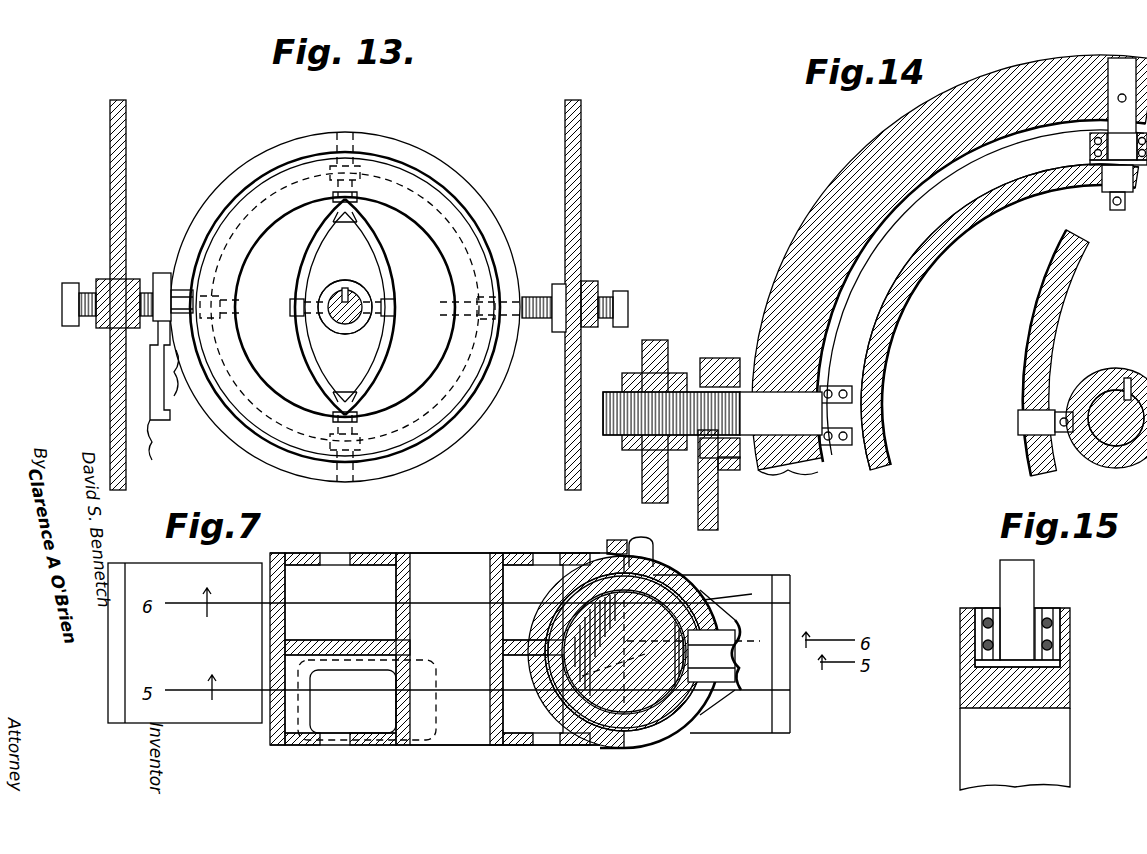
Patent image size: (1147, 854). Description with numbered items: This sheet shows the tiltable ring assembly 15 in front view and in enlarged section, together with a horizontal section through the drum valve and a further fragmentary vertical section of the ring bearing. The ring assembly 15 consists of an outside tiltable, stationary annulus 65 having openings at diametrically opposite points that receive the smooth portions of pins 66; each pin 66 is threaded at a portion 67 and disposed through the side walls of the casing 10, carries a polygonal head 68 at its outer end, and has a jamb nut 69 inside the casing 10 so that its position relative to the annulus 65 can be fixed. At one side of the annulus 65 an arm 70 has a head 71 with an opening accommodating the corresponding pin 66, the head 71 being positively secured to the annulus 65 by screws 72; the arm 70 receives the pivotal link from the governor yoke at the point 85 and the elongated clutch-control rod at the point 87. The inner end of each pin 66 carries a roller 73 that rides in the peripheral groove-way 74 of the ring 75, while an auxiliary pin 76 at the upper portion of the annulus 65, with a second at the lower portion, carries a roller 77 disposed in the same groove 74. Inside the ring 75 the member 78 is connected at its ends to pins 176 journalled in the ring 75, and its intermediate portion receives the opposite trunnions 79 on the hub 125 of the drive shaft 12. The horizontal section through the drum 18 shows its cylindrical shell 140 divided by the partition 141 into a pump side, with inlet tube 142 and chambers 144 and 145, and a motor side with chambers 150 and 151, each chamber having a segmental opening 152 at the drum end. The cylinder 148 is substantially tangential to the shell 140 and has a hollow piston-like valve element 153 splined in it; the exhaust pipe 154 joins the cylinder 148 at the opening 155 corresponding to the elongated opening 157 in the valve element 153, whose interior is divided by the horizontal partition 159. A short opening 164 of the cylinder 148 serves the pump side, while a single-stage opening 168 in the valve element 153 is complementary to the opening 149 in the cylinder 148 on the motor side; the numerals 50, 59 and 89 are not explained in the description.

In FIG. 13, the casing 10 is at (110, 236).
In FIG. 13, the drive shaft 12 is at (349, 287).
In FIG. 13, the ring assembly 15 is at (409, 129).
In FIG. 7, the drum 18 is at (410, 551).
In FIG. 7, the valve body wall 50 is at (492, 565).
In FIG. 7, the coupling block 59 is at (232, 574).
In FIG. 13, the annulus 65 is at (421, 165).
In FIG. 14, the annulus 65 is at (806, 228).
In FIG. 14, the pins 66 is at (762, 342).
In FIG. 13, the threaded portion 67 is at (548, 283).
In FIG. 14, the threaded portion 67 is at (692, 456).
In FIG. 13, the polygonal shaped head 68 is at (628, 292).
In FIG. 13, the jamb nut 69 is at (558, 333).
In FIG. 14, the arm 70 is at (720, 505).
In FIG. 14, the head 71 is at (706, 358).
In FIG. 14, the screws 72 is at (700, 372).
In FIG. 14, the roller 73 is at (878, 366).
In FIG. 14, the peripheral groove-way 74 is at (892, 304).
In FIG. 13, the ring 75 is at (439, 382).
In FIG. 14, the ring 75 is at (951, 264).
In FIG. 15, the ring 75 is at (1056, 702).
In FIG. 13, the auxiliary pin 76 is at (350, 482).
In FIG. 14, the auxiliary pin 76 is at (1113, 64).
In FIG. 15, the auxiliary pin 76 is at (1026, 592).
In FIG. 13, the roller 77 is at (290, 306).
In FIG. 14, the roller 77 is at (1090, 186).
In FIG. 15, the roller 77 is at (1052, 612).
In FIG. 13, the member 78 is at (298, 340).
In FIG. 14, the member 78 is at (1032, 350).
In FIG. 13, the trunnions 79 is at (395, 307).
In FIG. 14, the trunnions 79 is at (1022, 426).
In FIG. 13, the connection point 85 is at (168, 421).
In FIG. 13, the connection point 87 is at (151, 440).
In FIG. 7, the stem 89 is at (630, 548).
In FIG. 13, the hub 125 is at (359, 294).
In FIG. 14, the hub 125 is at (1106, 374).
In FIG. 7, the cylindrical shell 140 is at (290, 562).
In FIG. 7, the partition 141 is at (341, 649).
In FIG. 7, the inlet tube 142 is at (425, 668).
In FIG. 7, the chamber 144 is at (296, 713).
In FIG. 7, the chamber 145 is at (533, 694).
In FIG. 7, the cylinder 148 is at (716, 582).
In FIG. 7, the opening 149 is at (548, 633).
In FIG. 7, the chamber 150 is at (340, 602).
In FIG. 7, the chamber 151 is at (533, 602).
In FIG. 7, the segmental shaped openings 152 is at (345, 560).
In FIG. 7, the valve element 153 is at (645, 582).
In FIG. 7, the exhaust pipe 154 is at (780, 620).
In FIG. 7, the opening 155 is at (737, 702).
In FIG. 7, the elongated opening 157 is at (686, 672).
In FIG. 7, the horizontal partition 159 is at (792, 578).
In FIG. 7, the short opening 164 is at (575, 706).
In FIG. 7, the single stage opening 168 is at (630, 641).
In FIG. 13, the pins 176 is at (322, 200).
In FIG. 14, the pins 176 is at (1118, 228).